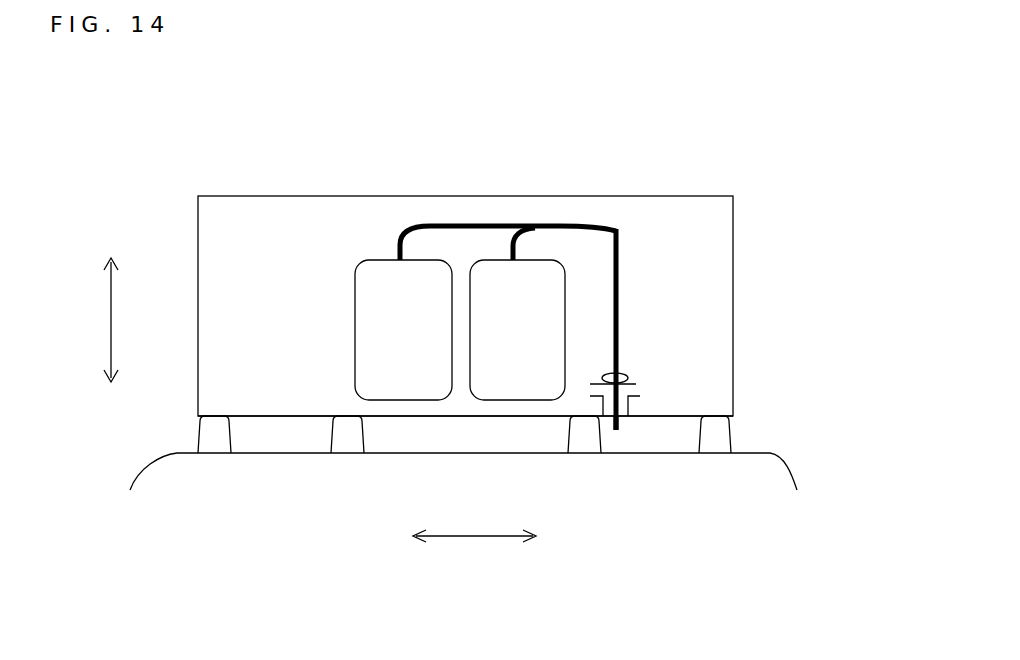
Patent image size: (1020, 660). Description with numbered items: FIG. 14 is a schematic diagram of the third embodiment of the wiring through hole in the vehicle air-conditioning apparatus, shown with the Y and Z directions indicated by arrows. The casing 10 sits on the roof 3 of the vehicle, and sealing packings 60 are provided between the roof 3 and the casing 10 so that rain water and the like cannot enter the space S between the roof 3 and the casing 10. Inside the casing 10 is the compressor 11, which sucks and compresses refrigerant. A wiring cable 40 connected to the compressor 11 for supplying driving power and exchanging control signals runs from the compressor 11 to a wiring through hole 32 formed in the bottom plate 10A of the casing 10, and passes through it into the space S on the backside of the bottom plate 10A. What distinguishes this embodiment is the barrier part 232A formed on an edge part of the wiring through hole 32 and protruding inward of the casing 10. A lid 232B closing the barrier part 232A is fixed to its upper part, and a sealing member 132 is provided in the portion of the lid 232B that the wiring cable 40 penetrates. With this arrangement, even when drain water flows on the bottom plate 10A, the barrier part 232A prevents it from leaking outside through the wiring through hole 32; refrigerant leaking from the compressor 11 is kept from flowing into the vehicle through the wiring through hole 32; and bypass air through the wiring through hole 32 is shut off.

The casing 10 is at (302, 196).
The bottom plate 10A is at (712, 414).
The compressor 11 is at (373, 343).
The wiring cable 40 is at (494, 222).
The wiring through hole 32 is at (619, 423).
The sealing member 132 is at (604, 376).
The lid 232B is at (638, 383).
The barrier part 232A is at (636, 398).
The sealing packing 60 is at (214, 446).
The space S is at (676, 434).
The roof 3 is at (772, 456).
The Z axis Z is at (110, 322).
The Y axis Y is at (470, 537).